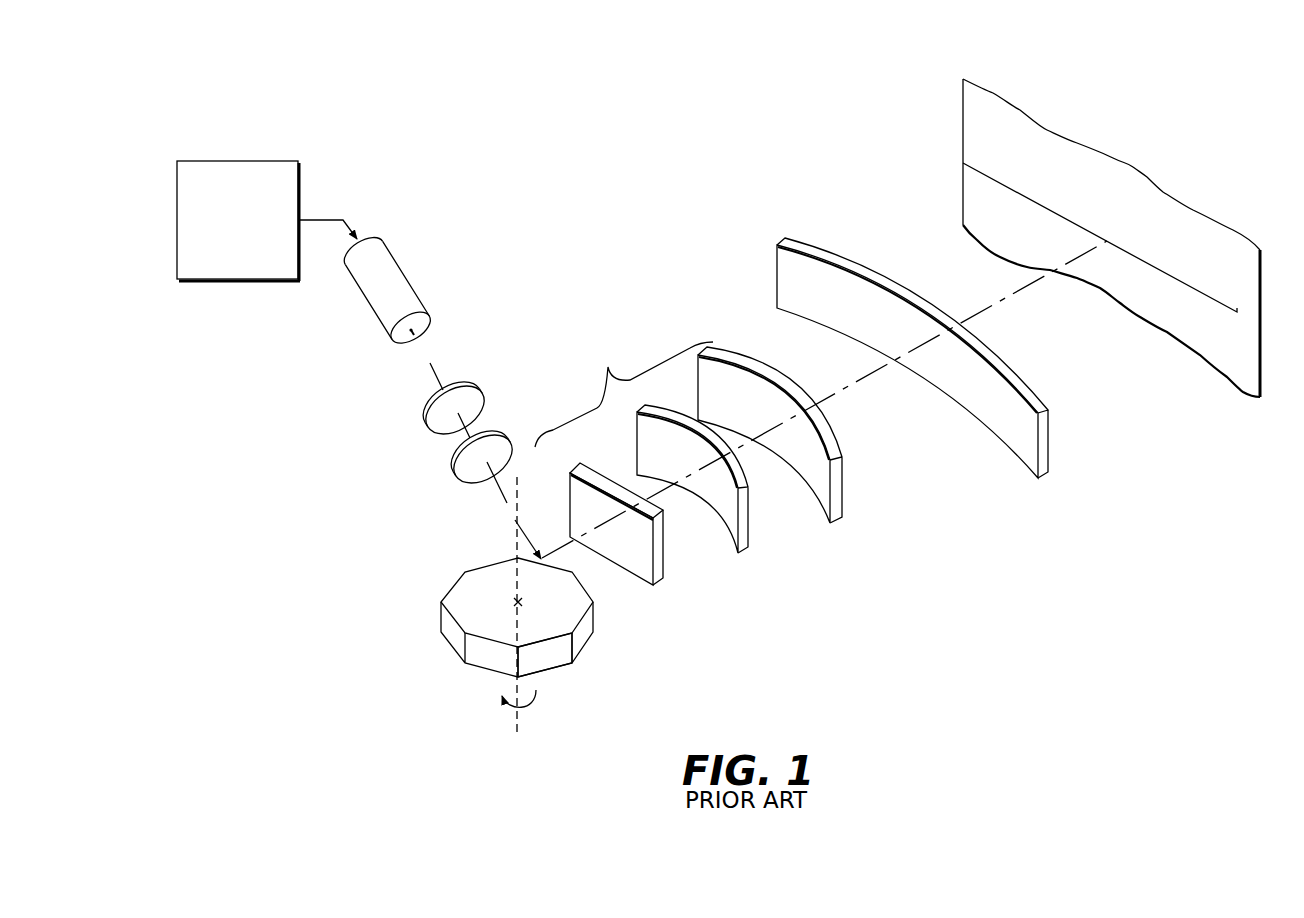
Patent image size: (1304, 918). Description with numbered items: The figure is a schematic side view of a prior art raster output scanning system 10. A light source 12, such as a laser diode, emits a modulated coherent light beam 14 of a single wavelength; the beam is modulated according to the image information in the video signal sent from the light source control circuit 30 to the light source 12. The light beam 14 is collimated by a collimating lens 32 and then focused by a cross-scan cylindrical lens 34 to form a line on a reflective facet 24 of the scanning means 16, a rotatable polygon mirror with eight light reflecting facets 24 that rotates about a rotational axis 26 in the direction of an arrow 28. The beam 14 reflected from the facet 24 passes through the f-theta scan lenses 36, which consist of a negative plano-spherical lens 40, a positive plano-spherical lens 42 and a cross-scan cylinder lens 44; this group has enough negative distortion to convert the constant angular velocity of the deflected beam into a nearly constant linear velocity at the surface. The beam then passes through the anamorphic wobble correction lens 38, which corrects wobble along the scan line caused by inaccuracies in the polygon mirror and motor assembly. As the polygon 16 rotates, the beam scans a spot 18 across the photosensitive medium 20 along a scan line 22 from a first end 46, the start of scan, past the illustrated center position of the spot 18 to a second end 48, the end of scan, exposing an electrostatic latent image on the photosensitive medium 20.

The raster output scanning system 10 is at (467, 106).
The light source 12 is at (398, 286).
The light beam 14 is at (422, 353).
The scanning means 16 is at (451, 559).
The spot 18 is at (1106, 240).
The photosensitive medium 20 is at (993, 107).
The scan line 22 is at (993, 160).
The light reflecting facets 24 is at (542, 662).
The rotational axis 26 is at (516, 541).
The arrow 28 is at (541, 708).
The light source control circuit 30 is at (265, 282).
The collimating lens 32 is at (435, 421).
The cross-scan cylindrical lens 34 is at (463, 473).
The f-theta scan lenses 36 is at (611, 358).
The anamorphic wobble correction lens 38 is at (1027, 453).
The negative plano-spherical lens 40 is at (657, 575).
The positive plano-spherical lens 42 is at (743, 547).
The cross-scan cylinder lens 44 is at (837, 507).
The first end of the scan line 46 is at (981, 163).
The second end of the scan line 48 is at (1237, 314).